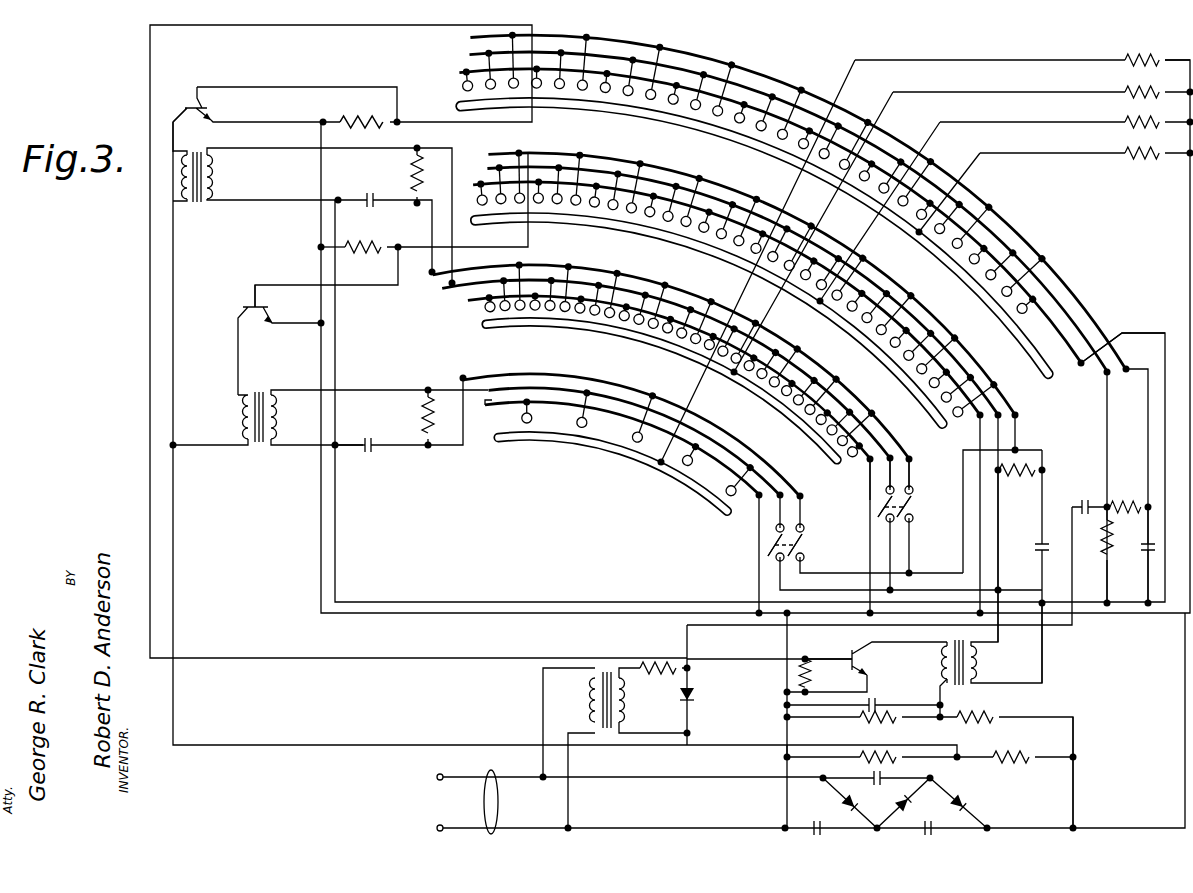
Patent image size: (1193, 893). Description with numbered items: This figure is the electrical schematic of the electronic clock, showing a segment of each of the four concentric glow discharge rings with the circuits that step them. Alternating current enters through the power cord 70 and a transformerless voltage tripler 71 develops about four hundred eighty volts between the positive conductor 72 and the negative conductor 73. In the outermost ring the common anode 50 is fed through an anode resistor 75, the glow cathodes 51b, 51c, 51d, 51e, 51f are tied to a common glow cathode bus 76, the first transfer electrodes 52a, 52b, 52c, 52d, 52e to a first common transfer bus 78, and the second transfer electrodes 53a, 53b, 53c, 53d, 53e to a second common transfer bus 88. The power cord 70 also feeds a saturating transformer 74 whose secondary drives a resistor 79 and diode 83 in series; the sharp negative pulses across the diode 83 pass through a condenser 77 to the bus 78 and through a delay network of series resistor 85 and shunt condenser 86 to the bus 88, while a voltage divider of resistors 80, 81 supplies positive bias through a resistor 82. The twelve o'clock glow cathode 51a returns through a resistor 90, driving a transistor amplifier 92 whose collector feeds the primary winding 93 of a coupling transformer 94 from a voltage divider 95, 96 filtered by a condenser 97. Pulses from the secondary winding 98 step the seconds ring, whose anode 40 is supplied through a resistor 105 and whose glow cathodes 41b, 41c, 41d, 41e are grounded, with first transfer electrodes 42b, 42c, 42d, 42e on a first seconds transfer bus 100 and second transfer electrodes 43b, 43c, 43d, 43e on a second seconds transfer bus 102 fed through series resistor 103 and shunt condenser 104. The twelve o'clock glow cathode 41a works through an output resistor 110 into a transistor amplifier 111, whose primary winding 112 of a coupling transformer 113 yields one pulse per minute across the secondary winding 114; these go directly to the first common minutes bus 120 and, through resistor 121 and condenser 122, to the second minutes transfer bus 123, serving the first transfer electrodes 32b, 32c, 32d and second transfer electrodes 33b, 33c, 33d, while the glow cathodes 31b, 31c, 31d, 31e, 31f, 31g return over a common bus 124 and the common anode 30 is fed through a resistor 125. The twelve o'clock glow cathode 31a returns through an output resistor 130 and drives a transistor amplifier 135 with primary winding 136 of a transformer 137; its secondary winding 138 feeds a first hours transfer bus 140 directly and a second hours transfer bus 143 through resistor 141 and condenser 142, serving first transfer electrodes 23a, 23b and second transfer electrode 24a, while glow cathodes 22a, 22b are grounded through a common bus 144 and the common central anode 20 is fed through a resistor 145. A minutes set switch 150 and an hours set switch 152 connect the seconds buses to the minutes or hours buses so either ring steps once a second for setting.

The common central anode 20 is at (549, 440).
The glow cathode 22a is at (527, 445).
The first transfer electrode 23a is at (577, 449).
The second transfer electrode 24a is at (628, 462).
The glow cathode 22b is at (674, 484).
The first transfer electrode 23b is at (714, 512).
The common anode 30 is at (784, 426).
The glow cathode 31a is at (505, 312).
The glow cathode 31b is at (550, 312).
The first transfer electrode 32b is at (564, 312).
The second transfer electrode 33b is at (579, 314).
The glow cathode 31c is at (594, 316).
The first transfer electrode 32c is at (608, 319).
The second transfer electrode 33c is at (623, 322).
The glow cathode 31d is at (637, 325).
The first transfer electrode 32d is at (652, 329).
The second transfer electrode 33d is at (666, 334).
The glow cathode 31e is at (680, 339).
The glow cathode 31f is at (720, 357).
The glow cathode 31g is at (759, 379).
The switch deck contact ring 40 is at (880, 348).
The glow cathode 41a is at (520, 204).
The glow cathode 41b is at (575, 206).
The first transfer electrode 42b is at (594, 208).
The second transfer electrode 43b is at (612, 211).
The glow cathode 41c is at (630, 214).
The first transfer electrode 42c is at (648, 218).
The second transfer electrode 43c is at (666, 222).
The glow cathode 41d is at (684, 227).
The first transfer electrode 42d is at (702, 233).
The second transfer electrode 43d is at (719, 239).
The glow cathode 41e is at (736, 246).
The first transfer electrode 42e is at (753, 254).
The second transfer electrode 43e is at (770, 262).
The common anode 50 is at (950, 266).
The glow cathode 51a is at (536, 89).
The first transfer electrode 52a is at (559, 90).
The second transfer electrode 53a is at (582, 91).
The glow cathode 51b is at (605, 93).
The first transfer electrode 52b is at (627, 97).
The second transfer electrode 53b is at (650, 100).
The glow cathode 51c is at (672, 105).
The first transfer electrode 52c is at (694, 110).
The second transfer electrode 53c is at (716, 117).
The glow cathode 51d is at (738, 124).
The first transfer electrode 52d is at (759, 131).
The second transfer electrode 53d is at (780, 140).
The glow cathode 51e is at (801, 149).
The first transfer electrode 52e is at (821, 159).
The second transfer electrode 53e is at (842, 170).
The glow cathode 51f is at (861, 181).
The power cord 70 is at (480, 835).
The voltage tripler power supply 71 is at (886, 806).
The positive conductor 72 is at (1078, 770).
The negative conductor 73 is at (785, 757).
The saturating transformer 74 is at (607, 672).
The anode resistor 75 is at (1140, 144).
The common glow cathode bus 76 is at (1092, 368).
The condenser 77 is at (1085, 497).
The first common transfer bus 78 is at (1072, 262).
The resistor 79 is at (660, 662).
The resistor 80 is at (1005, 763).
The resistor 81 is at (875, 750).
The resistor 82 is at (1102, 548).
The diode 83 is at (696, 698).
The series resistor 85 is at (1128, 500).
The shunt condenser 86 is at (1140, 553).
The second common transfer bus 88 is at (1050, 232).
The resistor 90 is at (798, 677).
The transistor amplifier 92 is at (845, 653).
The primary winding 93 is at (940, 672).
The coupling transformer 94 is at (940, 653).
The resistor 95 is at (975, 712).
The resistor 96 is at (885, 724).
The filter condenser 97 is at (876, 692).
The secondary winding 98 is at (980, 660).
The first common seconds transfer bus 100 is at (965, 349).
The second common seconds transfer bus 102 is at (940, 309).
The series resistor 103 is at (1030, 465).
The shunt condenser 104 is at (1028, 552).
The resistor 105 is at (1140, 113).
The output resistor 110 is at (362, 116).
The transistor amplifier 111 is at (245, 106).
The primary winding 112 is at (178, 180).
The coupling transformer 113 is at (194, 137).
The secondary winding 114 is at (215, 178).
The first common minutes bus 120 is at (866, 416).
The resistor 121 is at (410, 178).
The condenser 122 is at (370, 208).
The second common minutes transfer bus 123 is at (850, 396).
The common bus 124 is at (878, 498).
The resistor 125 is at (1138, 84).
The output resistor 130 is at (370, 253).
The transistor amplifier 135 is at (235, 298).
The primary winding 136 is at (242, 412).
The transformer 137 is at (285, 378).
The secondary winding 138 is at (278, 420).
The first hours transfer bus 140 is at (835, 462).
The resistor 141 is at (420, 414).
The condenser 142 is at (362, 455).
The second hours transfer bus 143 is at (870, 488).
The common bus 144 is at (485, 407).
The resistor 145 is at (1140, 58).
The minutes set switch 150 is at (940, 511).
The hours set switch 152 is at (835, 553).